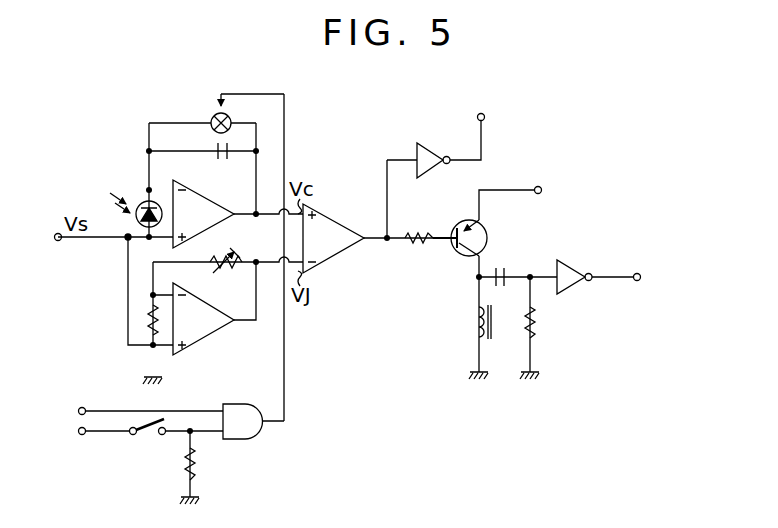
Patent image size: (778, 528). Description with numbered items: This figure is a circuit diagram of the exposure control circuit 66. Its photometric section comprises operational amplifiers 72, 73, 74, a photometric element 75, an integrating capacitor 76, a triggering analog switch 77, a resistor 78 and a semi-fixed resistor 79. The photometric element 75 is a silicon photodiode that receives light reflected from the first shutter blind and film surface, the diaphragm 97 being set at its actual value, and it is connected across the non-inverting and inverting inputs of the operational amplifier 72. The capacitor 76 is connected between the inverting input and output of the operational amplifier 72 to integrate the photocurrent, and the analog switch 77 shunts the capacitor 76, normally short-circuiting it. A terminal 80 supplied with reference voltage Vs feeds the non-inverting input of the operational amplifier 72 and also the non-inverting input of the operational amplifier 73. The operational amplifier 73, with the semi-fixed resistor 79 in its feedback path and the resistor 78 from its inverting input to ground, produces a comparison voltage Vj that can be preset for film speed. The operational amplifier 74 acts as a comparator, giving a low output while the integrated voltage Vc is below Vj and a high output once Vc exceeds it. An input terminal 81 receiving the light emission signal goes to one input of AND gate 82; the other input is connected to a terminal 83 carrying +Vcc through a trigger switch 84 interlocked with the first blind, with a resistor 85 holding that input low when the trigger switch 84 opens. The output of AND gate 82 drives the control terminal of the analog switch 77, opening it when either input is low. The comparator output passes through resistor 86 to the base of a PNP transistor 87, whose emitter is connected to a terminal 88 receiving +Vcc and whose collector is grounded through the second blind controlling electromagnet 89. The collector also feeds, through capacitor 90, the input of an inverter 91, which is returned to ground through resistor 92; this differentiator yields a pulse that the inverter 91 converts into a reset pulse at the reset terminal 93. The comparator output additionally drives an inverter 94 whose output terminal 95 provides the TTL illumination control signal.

The exposure control circuit 66 is at (363, 115).
The operational amplifier 72 is at (222, 210).
The operational amplifier 73 is at (218, 310).
The operational amplifier 74 is at (350, 220).
The photometric element 75 is at (127, 240).
The integrating capacitor 76 is at (219, 160).
The triggering analog switch 77 is at (214, 116).
The resistor 78 is at (147, 321).
The semi-fixed resistor 79 is at (226, 250).
The terminal 80 is at (54, 237).
The input terminal 81 is at (78, 411).
The AND gate 82 is at (250, 437).
The terminal 83 is at (78, 431).
The trigger switch 84 is at (148, 437).
The resistor 85 is at (196, 467).
The resistor 86 is at (416, 233).
The PNP transistor 87 is at (481, 227).
The terminal 88 is at (542, 189).
The second blind controlling electromagnet 89 is at (478, 322).
The capacitor 90 is at (503, 270).
The inverter 91 is at (574, 271).
The resistor 92 is at (535, 325).
The reset terminal 93 is at (641, 277).
The inverter 94 is at (440, 151).
The output terminal 95 is at (484, 114).
The diaphragm 97 is at (128, 206).